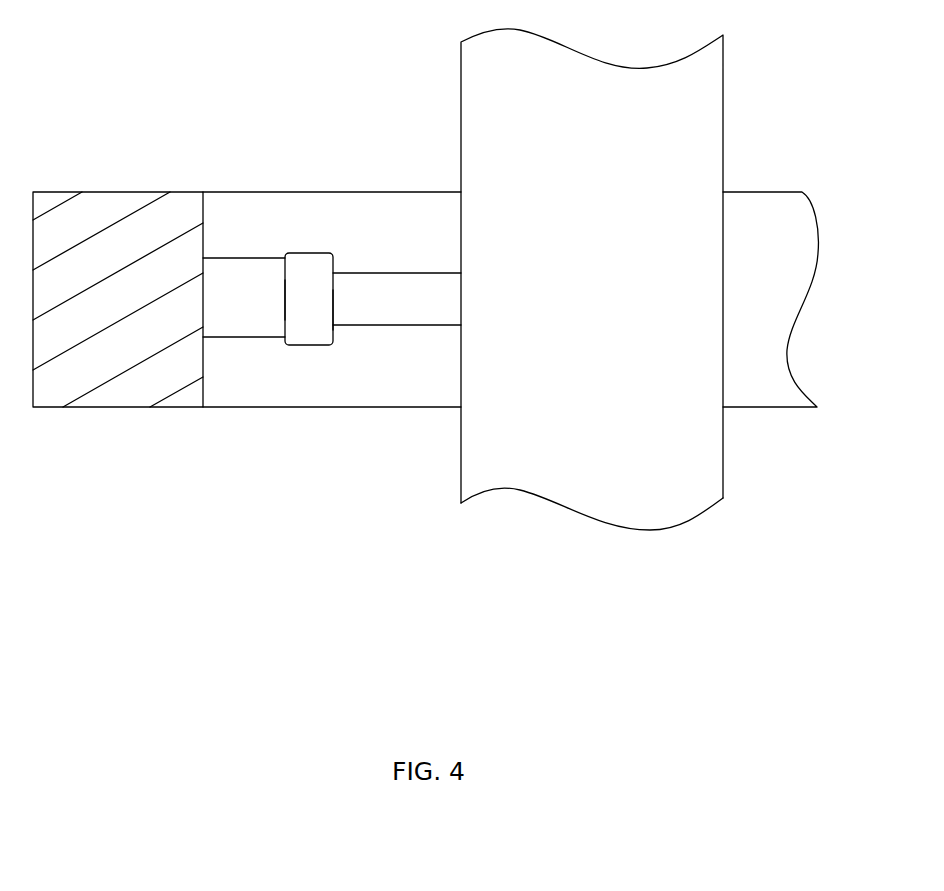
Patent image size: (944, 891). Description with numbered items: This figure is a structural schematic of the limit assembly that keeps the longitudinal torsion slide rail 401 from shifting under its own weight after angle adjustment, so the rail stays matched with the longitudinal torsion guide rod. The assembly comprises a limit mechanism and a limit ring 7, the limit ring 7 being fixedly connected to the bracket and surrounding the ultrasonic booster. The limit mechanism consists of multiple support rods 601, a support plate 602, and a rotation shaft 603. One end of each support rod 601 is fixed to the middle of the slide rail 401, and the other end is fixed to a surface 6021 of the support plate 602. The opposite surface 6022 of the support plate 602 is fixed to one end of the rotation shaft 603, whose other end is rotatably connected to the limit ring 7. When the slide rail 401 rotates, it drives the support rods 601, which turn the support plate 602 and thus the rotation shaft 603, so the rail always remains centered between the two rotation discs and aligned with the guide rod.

The limit ring 7 is at (91, 342).
The longitudinal torsion slide rail 401 is at (626, 330).
The support rods 601 is at (410, 302).
The support plate 602 is at (305, 308).
The surface of the support plate 6021 is at (332, 303).
The another surface of the support plate 6022 is at (283, 295).
The rotation shaft 603 is at (227, 302).